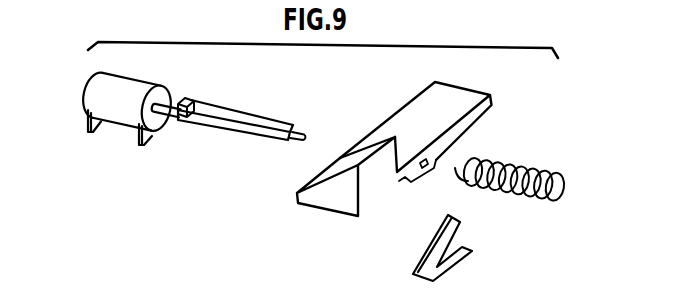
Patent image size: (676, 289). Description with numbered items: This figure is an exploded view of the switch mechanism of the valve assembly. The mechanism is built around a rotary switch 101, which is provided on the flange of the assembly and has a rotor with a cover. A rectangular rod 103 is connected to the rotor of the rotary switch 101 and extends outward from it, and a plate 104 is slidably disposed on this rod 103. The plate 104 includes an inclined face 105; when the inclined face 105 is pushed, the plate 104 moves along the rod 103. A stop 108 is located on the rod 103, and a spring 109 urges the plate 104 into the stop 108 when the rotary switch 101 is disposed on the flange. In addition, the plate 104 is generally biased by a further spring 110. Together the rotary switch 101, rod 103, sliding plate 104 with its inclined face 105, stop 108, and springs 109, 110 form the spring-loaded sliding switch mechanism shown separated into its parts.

The rotary switch 101 is at (95, 95).
The rectangular rod 103 is at (237, 127).
The plate 104 is at (458, 104).
The inclined face 105 is at (327, 168).
The stop 108 is at (193, 99).
The spring 109 is at (564, 190).
The spring 110 is at (472, 251).